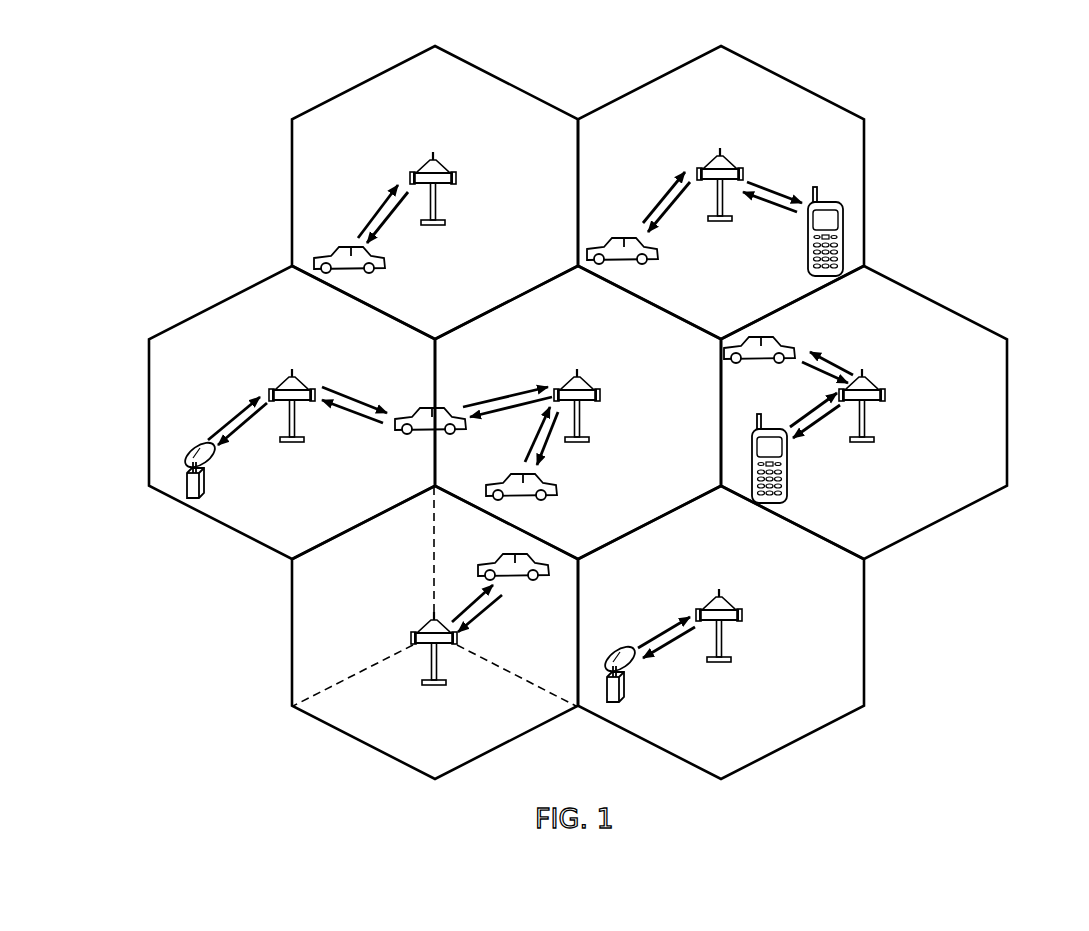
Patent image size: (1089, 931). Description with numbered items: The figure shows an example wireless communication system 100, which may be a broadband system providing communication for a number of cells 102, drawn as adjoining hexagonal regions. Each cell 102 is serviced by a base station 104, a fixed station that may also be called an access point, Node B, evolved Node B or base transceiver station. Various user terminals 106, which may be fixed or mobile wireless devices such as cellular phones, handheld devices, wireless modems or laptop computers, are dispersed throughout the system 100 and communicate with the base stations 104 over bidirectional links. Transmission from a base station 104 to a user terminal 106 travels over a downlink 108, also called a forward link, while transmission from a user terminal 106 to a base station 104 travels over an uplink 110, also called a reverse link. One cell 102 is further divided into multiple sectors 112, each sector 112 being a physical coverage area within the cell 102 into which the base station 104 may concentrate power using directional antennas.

The wireless communication system 100 is at (1030, 94).
The cell 102 is at (372, 75).
The base station 104 is at (434, 152).
The user terminal 106 is at (386, 266).
The downlink 108 is at (385, 225).
The uplink 110 is at (380, 210).
The sector 112 is at (485, 742).